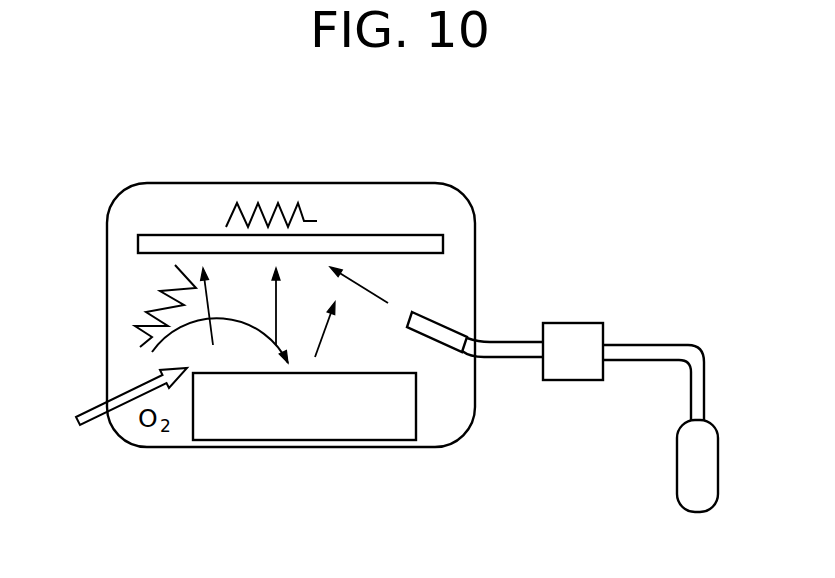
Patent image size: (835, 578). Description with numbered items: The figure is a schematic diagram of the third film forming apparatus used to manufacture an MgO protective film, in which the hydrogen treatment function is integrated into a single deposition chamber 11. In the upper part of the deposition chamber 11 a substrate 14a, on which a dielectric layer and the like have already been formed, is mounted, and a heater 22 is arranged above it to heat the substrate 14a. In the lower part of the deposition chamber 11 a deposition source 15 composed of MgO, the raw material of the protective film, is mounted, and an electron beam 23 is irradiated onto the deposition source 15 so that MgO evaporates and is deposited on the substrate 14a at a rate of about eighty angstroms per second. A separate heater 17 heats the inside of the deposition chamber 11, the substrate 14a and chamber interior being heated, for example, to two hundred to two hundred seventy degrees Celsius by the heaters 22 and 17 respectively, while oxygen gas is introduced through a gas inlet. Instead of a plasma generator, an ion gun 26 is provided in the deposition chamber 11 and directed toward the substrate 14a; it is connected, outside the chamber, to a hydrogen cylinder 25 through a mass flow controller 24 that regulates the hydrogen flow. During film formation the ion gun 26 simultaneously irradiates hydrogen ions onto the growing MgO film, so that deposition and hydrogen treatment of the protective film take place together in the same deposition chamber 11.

The deposition chamber 11 is at (378, 213).
The substrate 14a is at (428, 243).
The heater 22 is at (270, 200).
The heater 17 is at (145, 303).
The electron beam 23 is at (246, 319).
The deposition source 15 is at (302, 432).
The ion gun 26 is at (438, 328).
The mass flow controller 24 is at (573, 382).
The hydrogen cylinder 25 is at (677, 487).